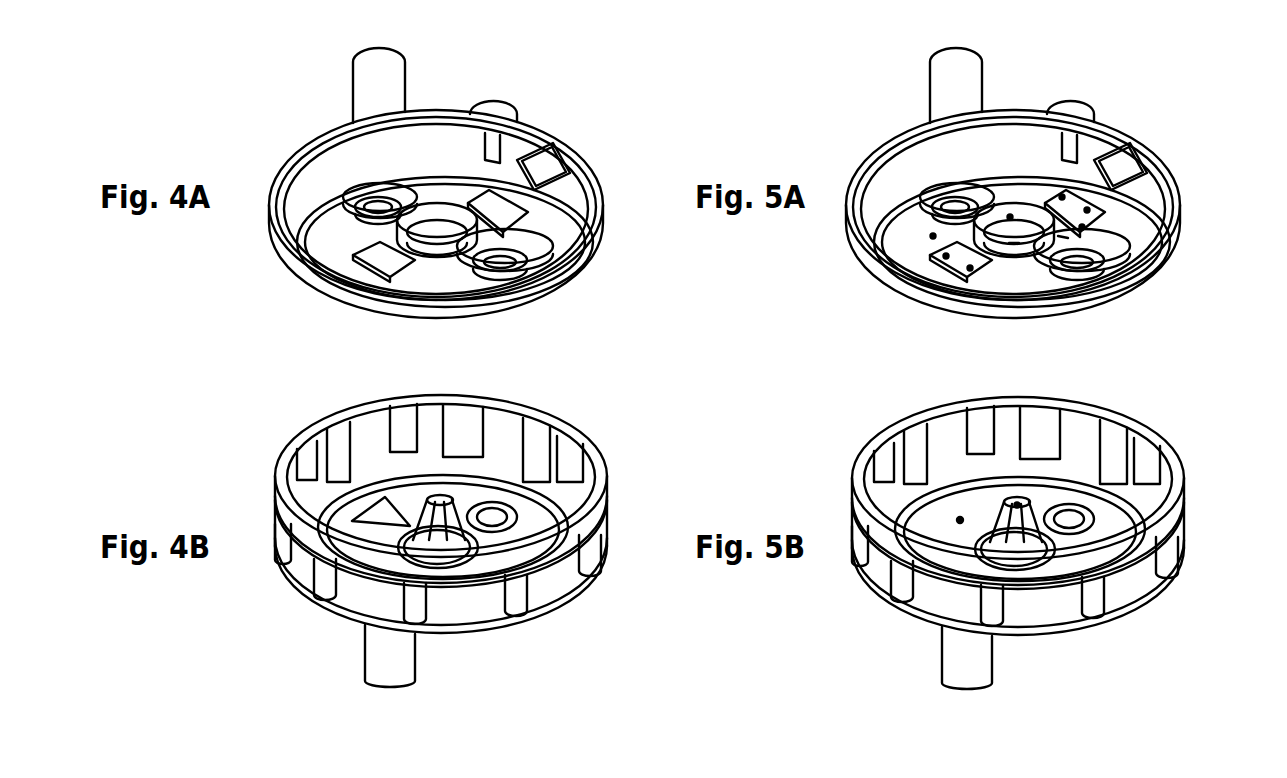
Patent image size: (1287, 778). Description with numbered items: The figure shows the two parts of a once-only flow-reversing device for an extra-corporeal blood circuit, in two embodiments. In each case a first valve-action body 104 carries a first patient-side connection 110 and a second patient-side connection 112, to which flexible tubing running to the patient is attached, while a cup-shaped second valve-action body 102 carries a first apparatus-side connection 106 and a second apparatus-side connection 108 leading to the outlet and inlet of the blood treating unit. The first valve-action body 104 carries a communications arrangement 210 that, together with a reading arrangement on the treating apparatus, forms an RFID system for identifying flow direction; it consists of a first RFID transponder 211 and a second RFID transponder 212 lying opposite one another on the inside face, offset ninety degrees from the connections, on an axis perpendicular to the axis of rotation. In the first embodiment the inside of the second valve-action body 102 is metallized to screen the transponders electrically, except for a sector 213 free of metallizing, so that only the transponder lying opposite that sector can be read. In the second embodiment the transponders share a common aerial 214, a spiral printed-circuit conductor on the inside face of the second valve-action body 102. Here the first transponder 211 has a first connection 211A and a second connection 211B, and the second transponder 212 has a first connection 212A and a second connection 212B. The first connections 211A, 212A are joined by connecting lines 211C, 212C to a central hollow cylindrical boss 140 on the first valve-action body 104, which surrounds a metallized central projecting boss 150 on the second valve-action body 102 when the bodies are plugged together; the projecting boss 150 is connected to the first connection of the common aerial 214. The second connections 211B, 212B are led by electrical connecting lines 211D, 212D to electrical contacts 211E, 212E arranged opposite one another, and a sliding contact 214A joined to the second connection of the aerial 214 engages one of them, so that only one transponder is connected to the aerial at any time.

In FIG. 4B, the second valve-action body 102 is at (565, 420).
In FIG. 5B, the second valve-action body 102 is at (1148, 430).
In FIG. 4A, the first valve-action body 104 is at (289, 154).
In FIG. 5A, the first valve-action body 104 is at (868, 154).
In FIG. 4B, the first apparatus-side connection 106 is at (512, 633).
In FIG. 5B, the first apparatus-side connection 106 is at (1080, 630).
In FIG. 4B, the second apparatus-side connection 108 is at (375, 658).
In FIG. 5B, the second apparatus-side connection 108 is at (975, 660).
In FIG. 4A, the first patient-side connection 110 is at (495, 105).
In FIG. 5A, the first patient-side connection 110 is at (1083, 113).
In FIG. 4A, the second patient-side connection 112 is at (378, 83).
In FIG. 5A, the second patient-side connection 112 is at (953, 92).
In FIG. 5A, the central hollow cylindrical boss 140 is at (1030, 212).
In FIG. 5B, the central projecting boss 150 is at (1005, 525).
In FIG. 4A, the communications arrangement 210 is at (293, 253).
In FIG. 4A, the first RFID transponder 211 is at (513, 213).
In FIG. 5A, the first RFID transponder 211 is at (1130, 208).
In FIG. 5A, the first connection of first transponder 211A is at (1082, 227).
In FIG. 5A, the second connection of first transponder 211B is at (1118, 178).
In FIG. 5A, the connecting line of first transponder 211C is at (1063, 237).
In FIG. 5A, the electrical connecting line of first transponder 211D is at (1087, 210).
In FIG. 5A, the electrical contact of first transponder 211E is at (1062, 197).
In FIG. 4A, the second RFID transponder 212 is at (383, 258).
In FIG. 5A, the second RFID transponder 212 is at (907, 237).
In FIG. 5A, the first connection of second transponder 212A is at (1010, 217).
In FIG. 5A, the second connection of second transponder 212B is at (920, 242).
In FIG. 5A, the connecting line of second transponder 212C is at (993, 238).
In FIG. 5A, the electrical connecting line of second transponder 212D is at (946, 256).
In FIG. 5A, the electrical contact of second transponder 212E is at (970, 268).
In FIG. 4B, the sector free of metallizing 213 is at (384, 497).
In FIG. 5B, the common aerial 214 is at (1115, 560).
In FIG. 5B, the sliding contact 214A is at (960, 520).